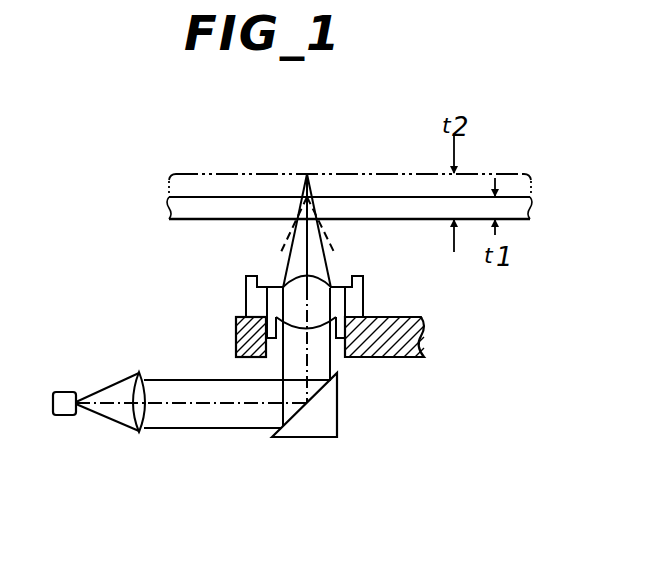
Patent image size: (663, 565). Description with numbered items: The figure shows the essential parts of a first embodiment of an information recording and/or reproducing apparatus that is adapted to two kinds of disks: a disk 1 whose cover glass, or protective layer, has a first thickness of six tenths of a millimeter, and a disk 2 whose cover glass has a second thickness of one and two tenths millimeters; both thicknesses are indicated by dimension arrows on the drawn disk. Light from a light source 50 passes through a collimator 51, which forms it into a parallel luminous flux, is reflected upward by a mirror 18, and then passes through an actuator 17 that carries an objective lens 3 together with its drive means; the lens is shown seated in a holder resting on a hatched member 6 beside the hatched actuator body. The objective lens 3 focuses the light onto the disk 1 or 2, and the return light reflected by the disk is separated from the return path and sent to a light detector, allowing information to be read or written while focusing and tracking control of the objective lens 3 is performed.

The disk 1 is at (519, 219).
The disk 2 is at (515, 174).
The objective lens 3 is at (246, 297).
The holder support member 6 is at (240, 332).
The actuator 17 is at (438, 333).
The mirror 18 is at (337, 420).
The light source 50 is at (63, 415).
The collimator 51 is at (140, 432).